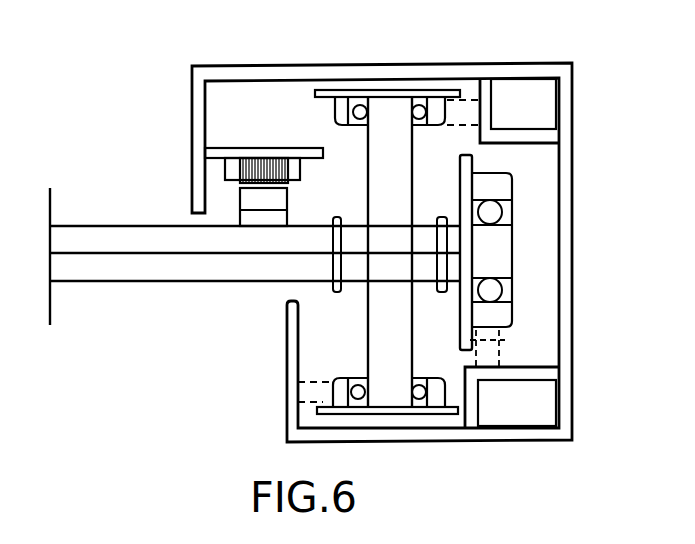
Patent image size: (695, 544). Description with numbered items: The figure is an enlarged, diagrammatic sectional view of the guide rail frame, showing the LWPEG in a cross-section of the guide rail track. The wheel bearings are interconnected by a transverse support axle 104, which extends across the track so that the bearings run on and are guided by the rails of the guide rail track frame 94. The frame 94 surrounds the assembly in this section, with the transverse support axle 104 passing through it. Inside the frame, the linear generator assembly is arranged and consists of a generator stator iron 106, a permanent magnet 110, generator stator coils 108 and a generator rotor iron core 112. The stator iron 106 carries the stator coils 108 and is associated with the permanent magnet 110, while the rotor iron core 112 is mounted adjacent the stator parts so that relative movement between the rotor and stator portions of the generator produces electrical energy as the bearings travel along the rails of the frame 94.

The guide rail track frame 94 is at (285, 425).
The transverse support axle 104 is at (367, 335).
The generator stator iron 106 is at (220, 153).
The generator stator coils 108 is at (223, 172).
The permanent magnet 110 is at (290, 165).
The generator rotor iron core 112 is at (240, 201).